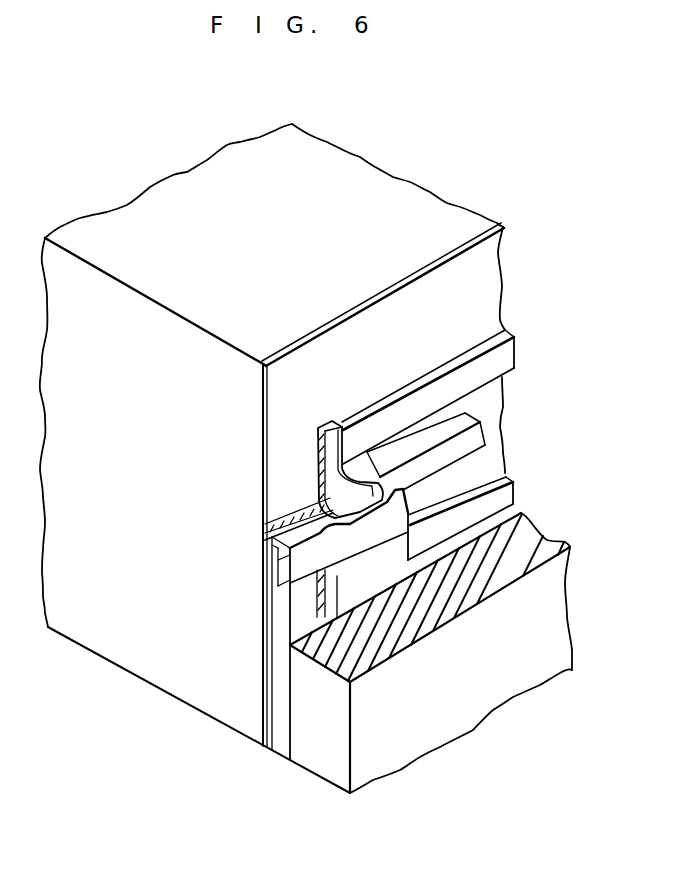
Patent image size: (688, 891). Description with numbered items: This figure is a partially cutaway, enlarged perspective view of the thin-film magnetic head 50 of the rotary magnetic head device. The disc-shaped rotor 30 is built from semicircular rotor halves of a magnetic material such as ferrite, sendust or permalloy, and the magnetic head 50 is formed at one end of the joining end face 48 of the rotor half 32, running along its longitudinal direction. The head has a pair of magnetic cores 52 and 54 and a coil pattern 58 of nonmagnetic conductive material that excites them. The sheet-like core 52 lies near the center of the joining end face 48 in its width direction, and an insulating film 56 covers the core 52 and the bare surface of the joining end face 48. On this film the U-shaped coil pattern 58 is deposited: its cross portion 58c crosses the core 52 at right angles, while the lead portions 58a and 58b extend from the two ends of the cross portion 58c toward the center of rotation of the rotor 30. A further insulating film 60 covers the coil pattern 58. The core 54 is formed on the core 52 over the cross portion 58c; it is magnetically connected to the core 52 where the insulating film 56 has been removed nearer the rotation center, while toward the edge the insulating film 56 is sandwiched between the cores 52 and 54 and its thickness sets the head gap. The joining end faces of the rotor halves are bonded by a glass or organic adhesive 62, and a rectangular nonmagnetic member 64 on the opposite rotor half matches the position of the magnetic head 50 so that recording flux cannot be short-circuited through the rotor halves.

The disc-shaped rotor 30 is at (78, 652).
The rotor half 32 is at (137, 650).
The joining end face 48 is at (278, 465).
The magnetic head 50 is at (406, 680).
The magnetic core 52 is at (270, 541).
The magnetic core 54 is at (278, 566).
The insulating film 56 is at (368, 326).
The coil pattern 58 is at (452, 466).
The lead portion 58a is at (440, 393).
The lead portion 58b is at (502, 505).
The cross portion 58c is at (370, 478).
The insulating film 60 is at (395, 500).
The adhesive 62 is at (278, 738).
The nonmagnetic member 64 is at (337, 756).